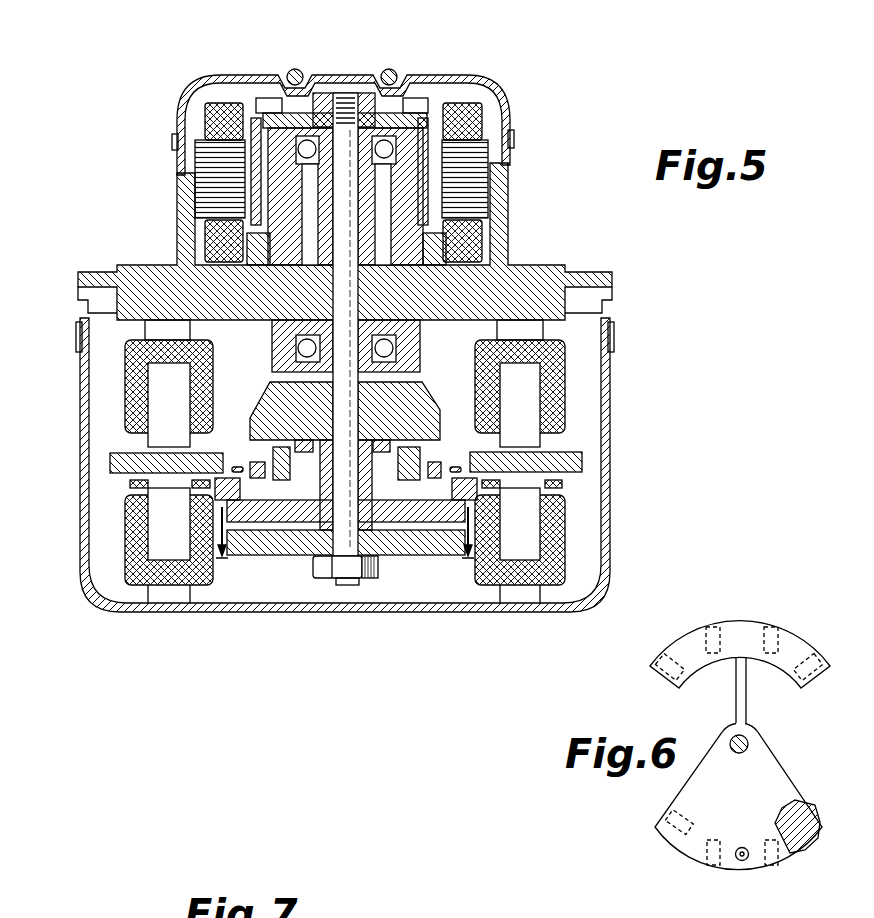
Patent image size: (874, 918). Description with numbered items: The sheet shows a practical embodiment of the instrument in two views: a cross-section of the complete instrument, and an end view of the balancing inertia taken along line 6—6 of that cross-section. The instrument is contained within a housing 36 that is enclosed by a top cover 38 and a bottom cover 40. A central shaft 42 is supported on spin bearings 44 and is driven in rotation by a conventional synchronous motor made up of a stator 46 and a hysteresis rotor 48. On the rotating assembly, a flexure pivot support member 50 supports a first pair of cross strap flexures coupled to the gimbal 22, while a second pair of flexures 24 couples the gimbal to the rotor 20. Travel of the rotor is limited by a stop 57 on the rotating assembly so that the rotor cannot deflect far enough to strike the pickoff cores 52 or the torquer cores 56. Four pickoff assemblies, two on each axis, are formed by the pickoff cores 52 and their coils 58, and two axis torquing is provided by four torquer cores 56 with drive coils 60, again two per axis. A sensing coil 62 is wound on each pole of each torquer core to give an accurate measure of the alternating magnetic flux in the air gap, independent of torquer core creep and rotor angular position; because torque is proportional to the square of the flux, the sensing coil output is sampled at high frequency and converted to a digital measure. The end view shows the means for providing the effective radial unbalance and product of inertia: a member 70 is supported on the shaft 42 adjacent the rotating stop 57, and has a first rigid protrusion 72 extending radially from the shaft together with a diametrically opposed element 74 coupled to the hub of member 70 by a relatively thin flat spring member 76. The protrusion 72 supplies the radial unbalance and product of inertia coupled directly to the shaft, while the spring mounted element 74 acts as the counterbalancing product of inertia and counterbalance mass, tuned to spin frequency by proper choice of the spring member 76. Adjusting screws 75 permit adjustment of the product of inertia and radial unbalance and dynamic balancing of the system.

In FIG. 5, the rotor 20 is at (118, 462).
In FIG. 5, the gimbal 22 is at (278, 492).
In FIG. 5, the second pair of flexures 24 is at (255, 460).
In FIG. 5, the housing 36 is at (553, 267).
In FIG. 5, the top cover 38 is at (485, 614).
In FIG. 5, the bottom cover 40 is at (500, 90).
In FIG. 5, the shaft 42 is at (332, 148).
In FIG. 6, the shaft 42 is at (752, 742).
In FIG. 5, the spin bearings 44 is at (373, 140).
In FIG. 5, the stator 46 is at (478, 186).
In FIG. 5, the hysteresis rotor 48 is at (447, 140).
In FIG. 5, the flexure pivot support member 50 is at (418, 395).
In FIG. 5, the pickoff cores 52 is at (156, 438).
In FIG. 5, the torquer cores 56 is at (158, 528).
In FIG. 5, the stop 57 is at (421, 535).
In FIG. 5, the pickoff coils 58 is at (135, 388).
In FIG. 5, the drive coils 60 is at (130, 568).
In FIG. 5, the sensing coil 62 is at (132, 483).
In FIG. 5, the section line 6- 6 is at (345, 550).
In FIG. 6, the member 70 is at (760, 748).
In FIG. 6, the first rigid protrusion 72 is at (688, 846).
In FIG. 6, the second diametrically opposed element 74 is at (747, 630).
In FIG. 6, the adjusting screws 75 is at (672, 816).
In FIG. 6, the flat spring member 76 is at (745, 706).